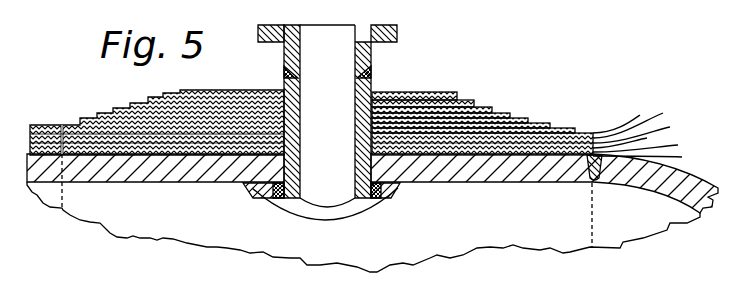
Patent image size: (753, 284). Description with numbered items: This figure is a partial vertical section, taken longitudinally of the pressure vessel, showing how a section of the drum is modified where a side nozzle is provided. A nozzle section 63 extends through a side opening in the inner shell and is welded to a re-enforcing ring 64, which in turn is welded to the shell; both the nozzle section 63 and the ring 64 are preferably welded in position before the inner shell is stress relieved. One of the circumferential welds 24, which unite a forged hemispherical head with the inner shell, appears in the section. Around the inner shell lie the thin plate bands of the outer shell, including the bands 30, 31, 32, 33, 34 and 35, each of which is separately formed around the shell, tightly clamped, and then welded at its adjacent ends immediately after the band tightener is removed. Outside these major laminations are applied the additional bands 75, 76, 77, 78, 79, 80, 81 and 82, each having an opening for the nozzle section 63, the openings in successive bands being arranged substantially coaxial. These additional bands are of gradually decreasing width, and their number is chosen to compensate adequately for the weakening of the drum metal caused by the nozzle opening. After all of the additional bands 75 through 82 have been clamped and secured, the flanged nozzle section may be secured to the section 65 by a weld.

The circumferential weld 24 is at (607, 170).
The bands 30 is at (641, 114).
The band 31 is at (641, 118).
The bands 32 is at (645, 127).
The band 33 is at (633, 141).
The bands 34 is at (651, 141).
The ply 35 is at (650, 156).
The nozzle section 63 is at (373, 84).
The re-enforcing ring 64 is at (375, 194).
The section 65 is at (283, 48).
The additional band 75 is at (424, 91).
The additional band 76 is at (463, 99).
The additional band 77 is at (492, 106).
The additional band 78 is at (509, 112).
The additional band 79 is at (524, 117).
The additional band 80 is at (549, 121).
The additional band 81 is at (576, 126).
The additional band 82 is at (595, 129).